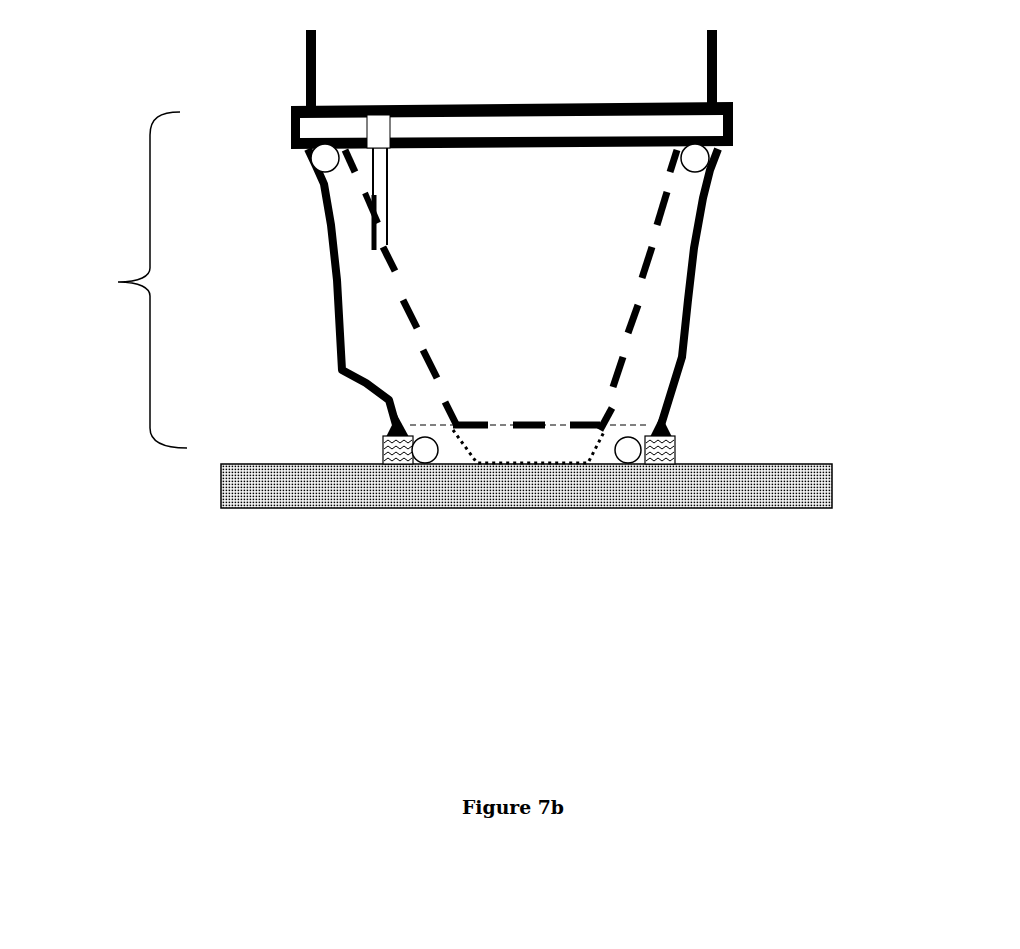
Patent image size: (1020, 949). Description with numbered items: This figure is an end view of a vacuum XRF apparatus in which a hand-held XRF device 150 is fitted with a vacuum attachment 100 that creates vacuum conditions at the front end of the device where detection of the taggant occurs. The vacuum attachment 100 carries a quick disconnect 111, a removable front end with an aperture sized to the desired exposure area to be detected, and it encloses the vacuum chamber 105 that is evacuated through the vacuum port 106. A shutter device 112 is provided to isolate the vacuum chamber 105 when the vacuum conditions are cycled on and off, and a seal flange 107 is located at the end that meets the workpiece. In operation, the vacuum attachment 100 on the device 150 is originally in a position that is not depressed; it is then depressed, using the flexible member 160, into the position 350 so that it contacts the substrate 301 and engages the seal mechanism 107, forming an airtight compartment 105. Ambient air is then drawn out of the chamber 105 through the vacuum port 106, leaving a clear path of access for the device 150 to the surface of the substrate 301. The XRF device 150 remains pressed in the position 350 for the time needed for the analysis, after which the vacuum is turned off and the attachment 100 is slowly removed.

The vacuum attachment 100 is at (110, 280).
The quick disconnect 111 is at (760, 125).
The hand-held XRF device 150 is at (329, 61).
The vacuum port 106 is at (357, 206).
The vacuum chamber 105 is at (359, 293).
The flexible member 160 is at (701, 357).
The shutter device 112 is at (681, 428).
The seal flange 107 is at (658, 482).
The substrate 301 is at (241, 465).
The depressed position 350 is at (495, 457).